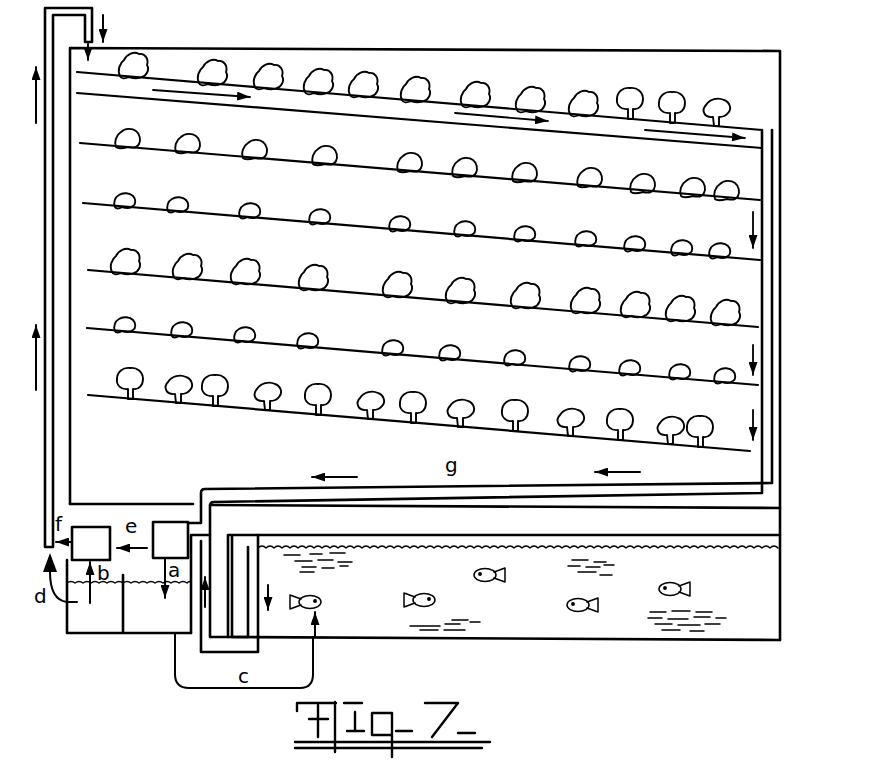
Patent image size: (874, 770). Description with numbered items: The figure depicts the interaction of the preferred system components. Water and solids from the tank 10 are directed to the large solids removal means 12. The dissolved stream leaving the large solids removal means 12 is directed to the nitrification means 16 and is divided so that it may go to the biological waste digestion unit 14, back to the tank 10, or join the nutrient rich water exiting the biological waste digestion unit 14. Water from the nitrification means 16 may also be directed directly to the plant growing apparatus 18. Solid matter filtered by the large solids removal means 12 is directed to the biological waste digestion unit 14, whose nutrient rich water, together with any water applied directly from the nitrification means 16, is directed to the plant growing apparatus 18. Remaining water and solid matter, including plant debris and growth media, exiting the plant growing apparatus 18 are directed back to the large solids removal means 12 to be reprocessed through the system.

The tank 10 is at (608, 640).
The large solids removal means 12 is at (170, 540).
The biological waste digestion unit 14 is at (91, 543).
The nitrification means 16 is at (129, 596).
The plant growing apparatus 18 is at (743, 178).